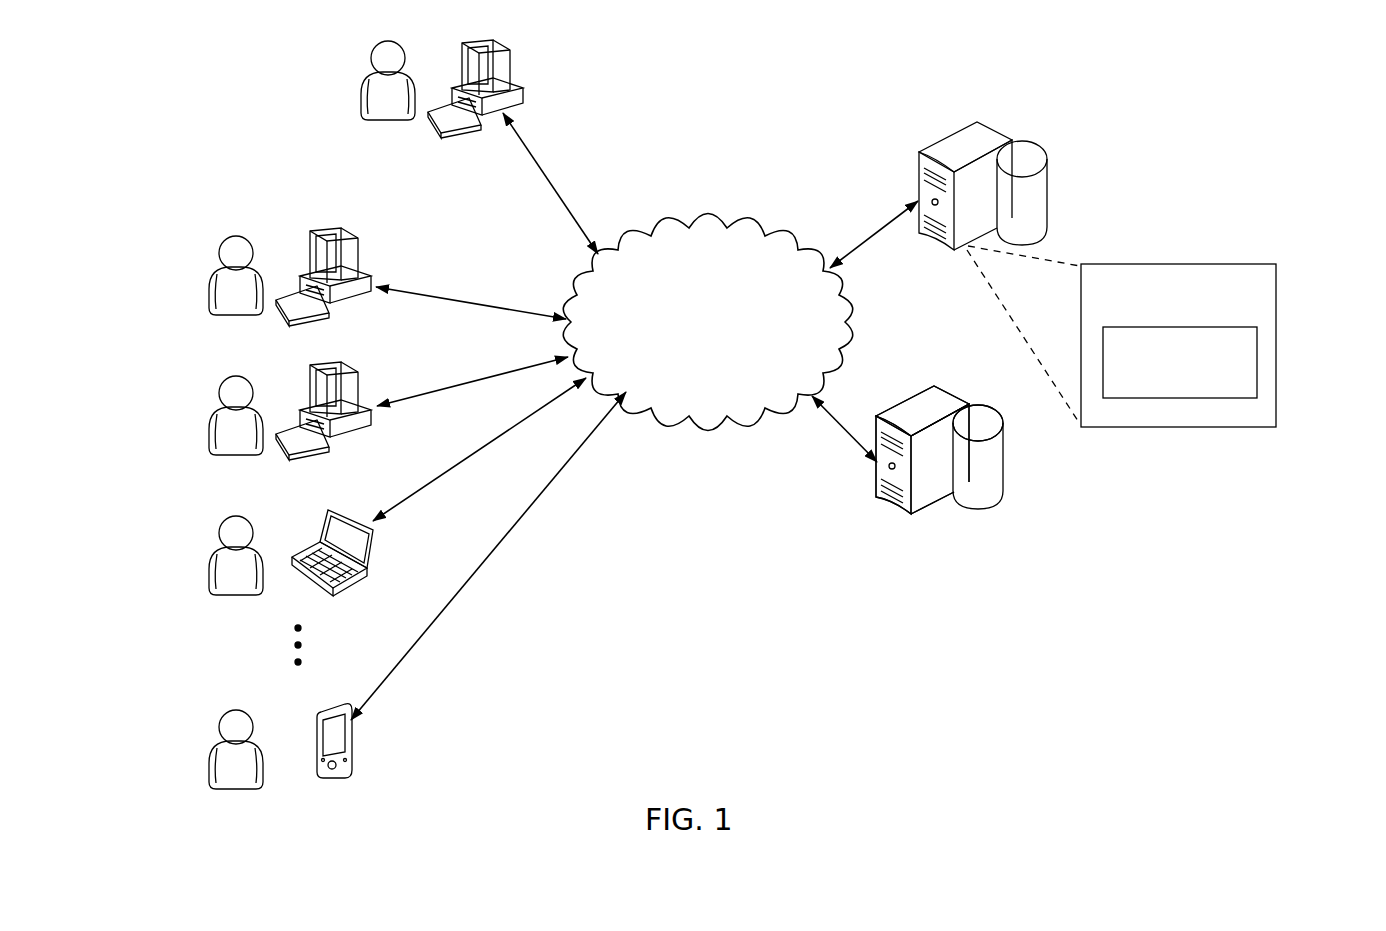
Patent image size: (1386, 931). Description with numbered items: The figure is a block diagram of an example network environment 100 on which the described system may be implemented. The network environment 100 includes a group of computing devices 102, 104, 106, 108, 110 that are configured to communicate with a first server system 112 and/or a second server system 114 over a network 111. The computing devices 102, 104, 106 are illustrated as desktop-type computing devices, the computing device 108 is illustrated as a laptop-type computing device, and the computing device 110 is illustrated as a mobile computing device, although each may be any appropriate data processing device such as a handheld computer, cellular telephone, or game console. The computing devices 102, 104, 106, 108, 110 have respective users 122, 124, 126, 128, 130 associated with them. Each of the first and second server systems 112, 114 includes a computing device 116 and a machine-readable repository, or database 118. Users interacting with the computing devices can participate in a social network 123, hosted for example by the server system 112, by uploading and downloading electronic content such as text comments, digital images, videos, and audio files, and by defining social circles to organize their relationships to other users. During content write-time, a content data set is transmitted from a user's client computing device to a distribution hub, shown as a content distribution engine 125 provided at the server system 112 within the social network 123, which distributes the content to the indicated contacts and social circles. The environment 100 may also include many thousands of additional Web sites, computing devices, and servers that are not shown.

The network environment 100 is at (812, 98).
The computing device 102 is at (476, 42).
The computing device 104 is at (328, 230).
The computing device 106 is at (328, 364).
The laptop-type computing device 108 is at (330, 510).
The mobile computing device 110 is at (314, 710).
The network 111 is at (720, 228).
The first server system 112 is at (930, 256).
The second server system 114 is at (886, 522).
The computing device 116 is at (990, 130).
The database 118 is at (1048, 192).
The user 122 is at (368, 74).
The social network 123 is at (1269, 298).
The user 124 is at (247, 238).
The content distribution engine 125 is at (1180, 398).
The user 126 is at (247, 378).
The user 128 is at (247, 518).
The user 130 is at (247, 712).